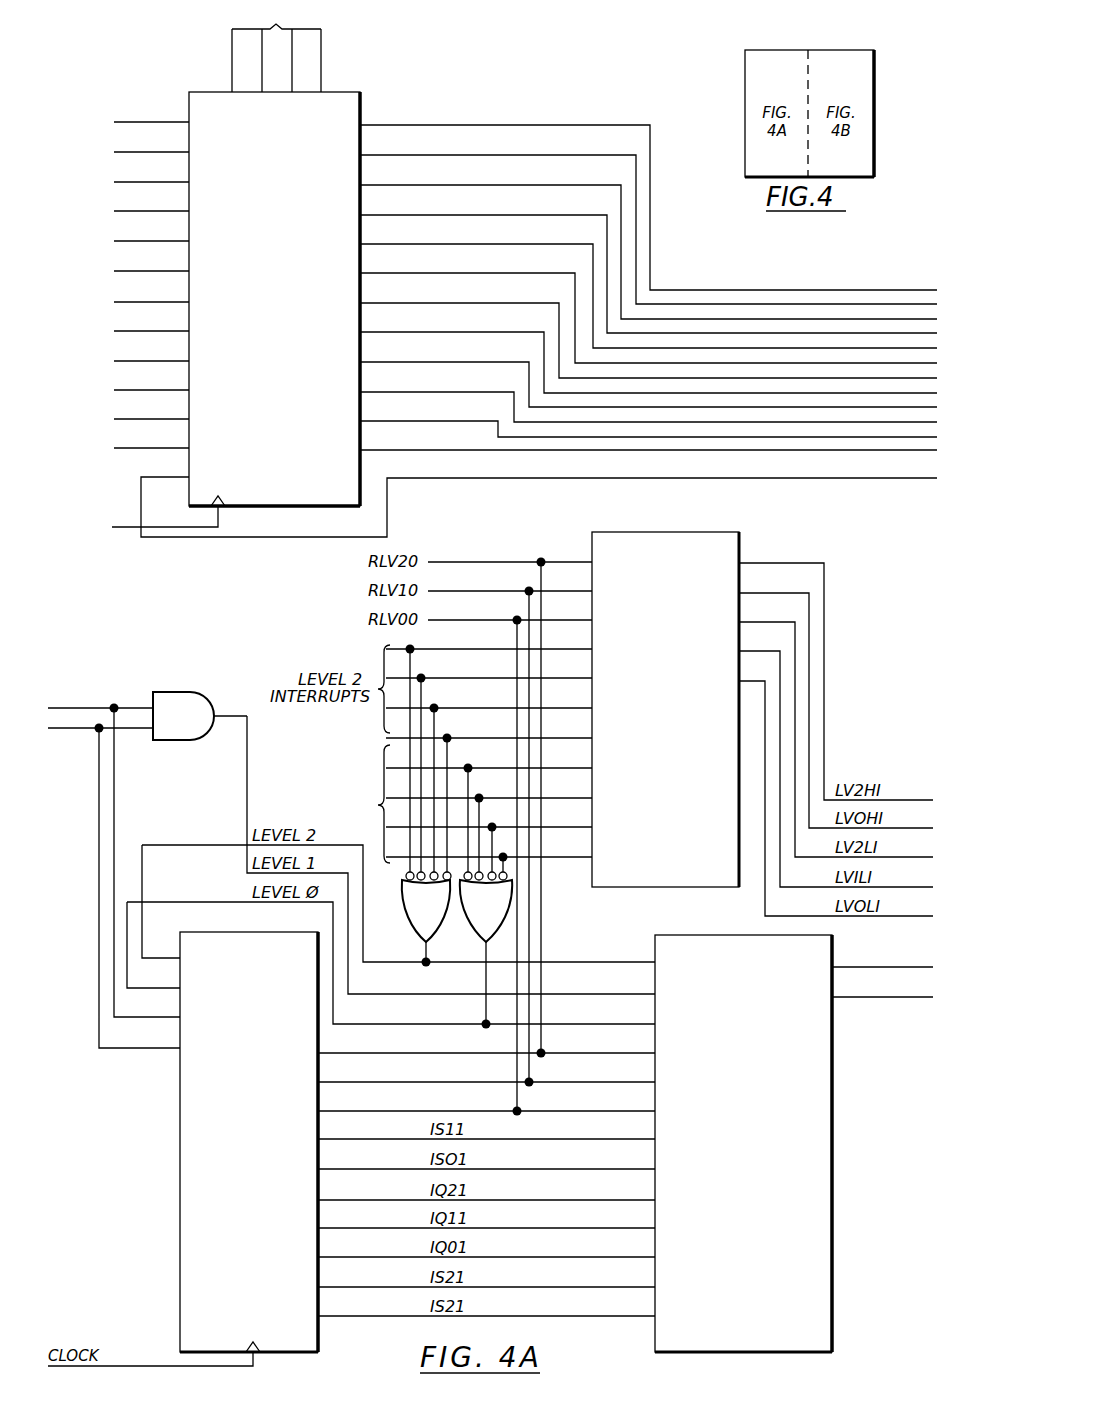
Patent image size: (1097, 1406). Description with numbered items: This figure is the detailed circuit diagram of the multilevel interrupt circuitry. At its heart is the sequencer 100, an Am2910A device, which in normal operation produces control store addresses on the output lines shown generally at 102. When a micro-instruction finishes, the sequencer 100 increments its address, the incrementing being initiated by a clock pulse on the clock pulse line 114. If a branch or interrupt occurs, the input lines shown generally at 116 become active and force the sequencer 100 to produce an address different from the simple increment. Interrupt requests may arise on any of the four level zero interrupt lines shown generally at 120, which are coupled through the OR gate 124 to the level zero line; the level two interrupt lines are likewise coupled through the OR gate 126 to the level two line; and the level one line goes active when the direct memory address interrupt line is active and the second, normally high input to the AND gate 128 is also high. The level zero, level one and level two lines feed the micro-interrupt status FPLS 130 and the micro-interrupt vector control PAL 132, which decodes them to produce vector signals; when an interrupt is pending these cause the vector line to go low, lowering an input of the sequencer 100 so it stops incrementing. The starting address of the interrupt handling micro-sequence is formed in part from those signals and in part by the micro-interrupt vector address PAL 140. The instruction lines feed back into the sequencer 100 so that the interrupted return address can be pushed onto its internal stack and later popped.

The sequencer 100 is at (340, 92).
The sequencer address output lines 102 is at (498, 117).
The clock pulse line 114 is at (118, 529).
The sequencer input lines 116 is at (72, 96).
The level 0 interrupt lines 120 is at (275, 795).
The OR gate 124 is at (498, 911).
The OR gate 126 is at (438, 911).
The AND gate 128 is at (192, 700).
The micro-interrupt status FPLS 130 is at (186, 944).
The micro-interrupt vector control PAL 132 is at (655, 953).
The micro-interrupt vector address PAL 140 is at (735, 548).